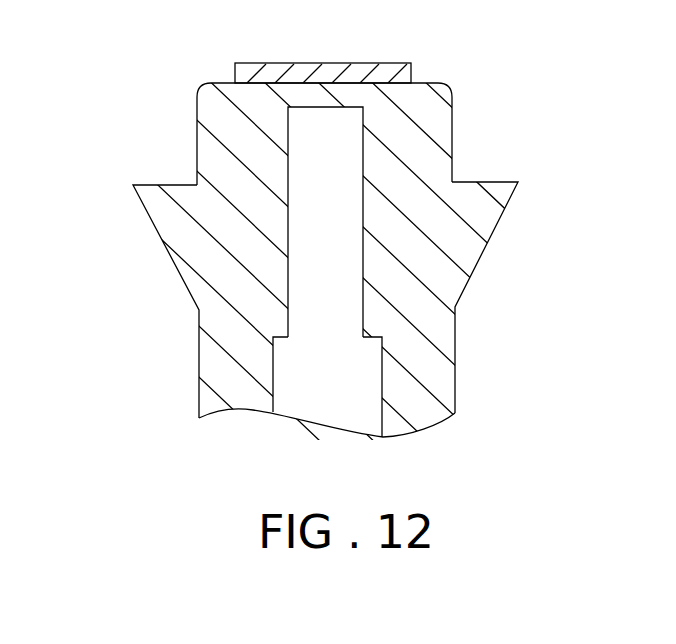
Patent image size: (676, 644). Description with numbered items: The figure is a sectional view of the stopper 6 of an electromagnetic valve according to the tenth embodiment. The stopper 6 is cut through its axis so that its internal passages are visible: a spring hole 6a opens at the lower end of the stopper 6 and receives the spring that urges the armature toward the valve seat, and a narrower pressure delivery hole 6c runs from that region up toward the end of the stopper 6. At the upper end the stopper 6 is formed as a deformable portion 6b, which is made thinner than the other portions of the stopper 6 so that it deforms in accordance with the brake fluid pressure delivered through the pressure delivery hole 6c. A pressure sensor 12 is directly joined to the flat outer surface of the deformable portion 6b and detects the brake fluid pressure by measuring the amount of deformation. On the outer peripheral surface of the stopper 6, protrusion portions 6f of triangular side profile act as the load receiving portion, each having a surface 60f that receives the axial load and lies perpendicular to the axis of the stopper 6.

The pressure sensor 12 is at (250, 73).
The stopper 6 is at (208, 109).
The deformable portion 6b is at (387, 93).
The protrusion portion 6f is at (484, 193).
The surface of protrusion portion 60f is at (150, 186).
The pressure delivery hole 6c is at (343, 308).
The spring hole 6a is at (363, 373).